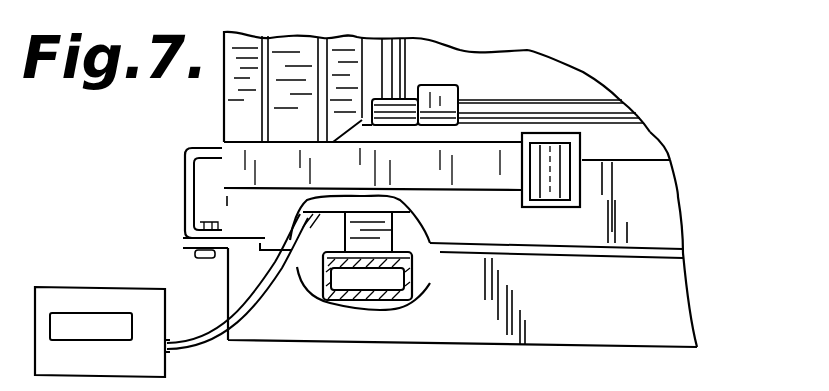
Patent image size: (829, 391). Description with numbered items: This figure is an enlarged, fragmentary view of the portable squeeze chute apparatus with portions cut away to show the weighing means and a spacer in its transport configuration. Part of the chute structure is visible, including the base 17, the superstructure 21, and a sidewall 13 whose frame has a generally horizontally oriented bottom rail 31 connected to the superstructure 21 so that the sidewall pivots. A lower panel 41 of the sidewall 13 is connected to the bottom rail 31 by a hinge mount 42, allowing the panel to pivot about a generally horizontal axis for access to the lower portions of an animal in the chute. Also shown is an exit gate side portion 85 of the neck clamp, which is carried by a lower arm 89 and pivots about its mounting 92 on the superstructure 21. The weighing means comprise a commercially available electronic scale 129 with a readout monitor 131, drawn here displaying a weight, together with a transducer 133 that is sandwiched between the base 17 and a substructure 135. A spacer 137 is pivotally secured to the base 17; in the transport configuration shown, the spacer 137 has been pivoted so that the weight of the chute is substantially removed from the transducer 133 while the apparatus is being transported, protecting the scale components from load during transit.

The sidewall 13 is at (336, 43).
The base 17 is at (186, 192).
The superstructure 21 is at (302, 24).
The bottom rail 31 is at (648, 146).
The lower panel 41 is at (452, 60).
The hinge mount 42 is at (433, 112).
The exit gate side portion 85 is at (232, 108).
The lower arm 89 is at (486, 180).
The mounting 92 is at (560, 172).
The electronic scale 129 is at (155, 368).
The readout monitor 131 is at (70, 312).
The transducer 133 is at (385, 242).
The substructure 135 is at (410, 278).
The spacer 137 is at (238, 247).